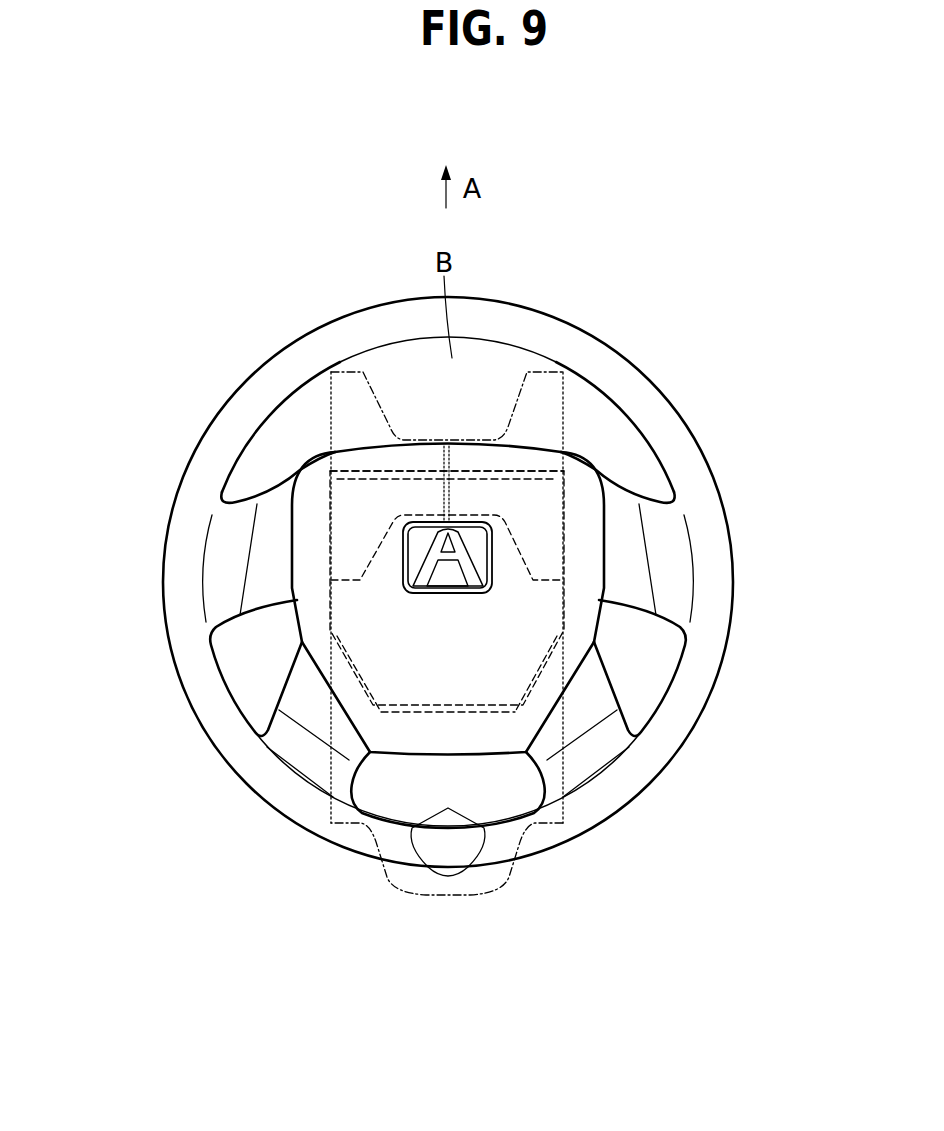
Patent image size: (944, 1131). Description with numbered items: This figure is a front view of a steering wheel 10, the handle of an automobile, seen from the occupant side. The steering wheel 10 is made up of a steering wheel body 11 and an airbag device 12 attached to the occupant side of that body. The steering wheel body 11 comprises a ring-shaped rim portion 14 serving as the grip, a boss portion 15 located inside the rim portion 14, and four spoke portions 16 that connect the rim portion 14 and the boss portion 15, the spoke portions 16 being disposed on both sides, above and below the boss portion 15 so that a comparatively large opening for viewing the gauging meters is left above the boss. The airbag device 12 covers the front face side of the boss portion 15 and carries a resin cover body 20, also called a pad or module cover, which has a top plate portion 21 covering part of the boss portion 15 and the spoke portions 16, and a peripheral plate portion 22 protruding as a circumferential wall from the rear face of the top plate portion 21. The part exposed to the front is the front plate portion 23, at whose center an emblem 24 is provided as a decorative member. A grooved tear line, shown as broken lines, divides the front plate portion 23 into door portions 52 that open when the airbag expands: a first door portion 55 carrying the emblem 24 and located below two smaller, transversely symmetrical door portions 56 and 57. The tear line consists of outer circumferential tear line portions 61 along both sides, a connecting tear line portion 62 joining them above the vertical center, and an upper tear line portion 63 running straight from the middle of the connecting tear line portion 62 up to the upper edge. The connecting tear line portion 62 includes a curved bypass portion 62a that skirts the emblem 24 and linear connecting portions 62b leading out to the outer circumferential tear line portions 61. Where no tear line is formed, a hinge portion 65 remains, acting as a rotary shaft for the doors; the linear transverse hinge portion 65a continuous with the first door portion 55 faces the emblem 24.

The steering wheel 10 is at (163, 577).
The steering wheel body 11 is at (172, 511).
The airbag device 12 is at (640, 420).
The rim portion 14 is at (489, 298).
The boss portion 15 is at (230, 453).
The spoke portions 16 is at (218, 492).
The cover body 20 is at (277, 484).
The top plate portion 21 is at (582, 456).
The peripheral plate portion 22 is at (563, 540).
The front plate portion 23 is at (463, 495).
The emblem 24 is at (403, 580).
The door portions 52 is at (500, 890).
The first door portion 55 is at (547, 824).
The second door portion 56 is at (358, 370).
The third door portion 57 is at (540, 370).
The outer circumferential tear line portions 61 is at (345, 587).
The connecting tear line portion 62 is at (392, 522).
The curved bypass portion 62a is at (543, 500).
The connecting portions 62b is at (297, 622).
The upper tear line portion 63 is at (443, 492).
The hinge portion 65 is at (410, 500).
The hinge portion 65a is at (425, 680).